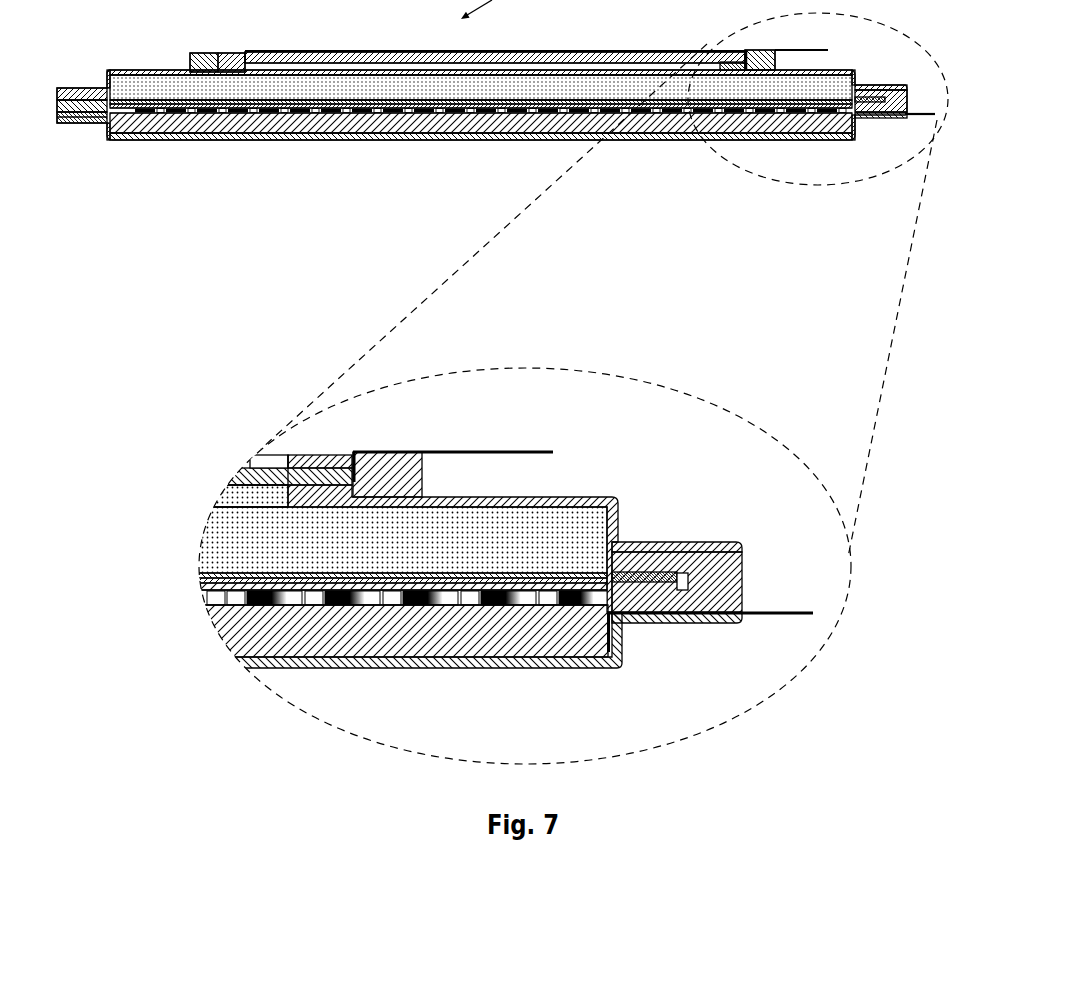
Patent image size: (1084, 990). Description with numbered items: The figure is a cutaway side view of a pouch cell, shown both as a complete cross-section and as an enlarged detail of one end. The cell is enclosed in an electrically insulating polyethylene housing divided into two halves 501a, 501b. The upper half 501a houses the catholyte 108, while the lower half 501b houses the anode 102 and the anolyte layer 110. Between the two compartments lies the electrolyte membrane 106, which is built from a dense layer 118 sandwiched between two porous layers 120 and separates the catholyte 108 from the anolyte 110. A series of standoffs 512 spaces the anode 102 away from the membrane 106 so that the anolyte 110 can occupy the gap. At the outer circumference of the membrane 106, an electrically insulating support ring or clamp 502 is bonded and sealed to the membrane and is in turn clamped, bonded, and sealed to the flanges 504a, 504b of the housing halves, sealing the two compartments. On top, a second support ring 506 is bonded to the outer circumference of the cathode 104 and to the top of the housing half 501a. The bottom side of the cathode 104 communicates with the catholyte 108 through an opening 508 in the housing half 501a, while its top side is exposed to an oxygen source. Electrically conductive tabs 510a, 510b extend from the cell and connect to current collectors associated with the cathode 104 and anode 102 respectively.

The anode 102 is at (457, 630).
The cathode 104 is at (323, 470).
The electrolyte membrane 106 is at (687, 579).
The catholyte 108 is at (485, 537).
The anolyte layer 110 is at (542, 600).
The dense layer 118 is at (390, 583).
The porous layers 120 is at (427, 577).
The housing half 501a is at (572, 498).
The housing half 501b is at (585, 665).
The support ring 502 is at (727, 563).
The flange 504a is at (668, 547).
The flange 504b is at (673, 622).
The support ring 506 is at (387, 472).
The opening 508 is at (254, 500).
The electrically conductive tab 510a is at (508, 453).
The electrically conductive tab 510b is at (755, 622).
The standoffs 512 is at (275, 600).